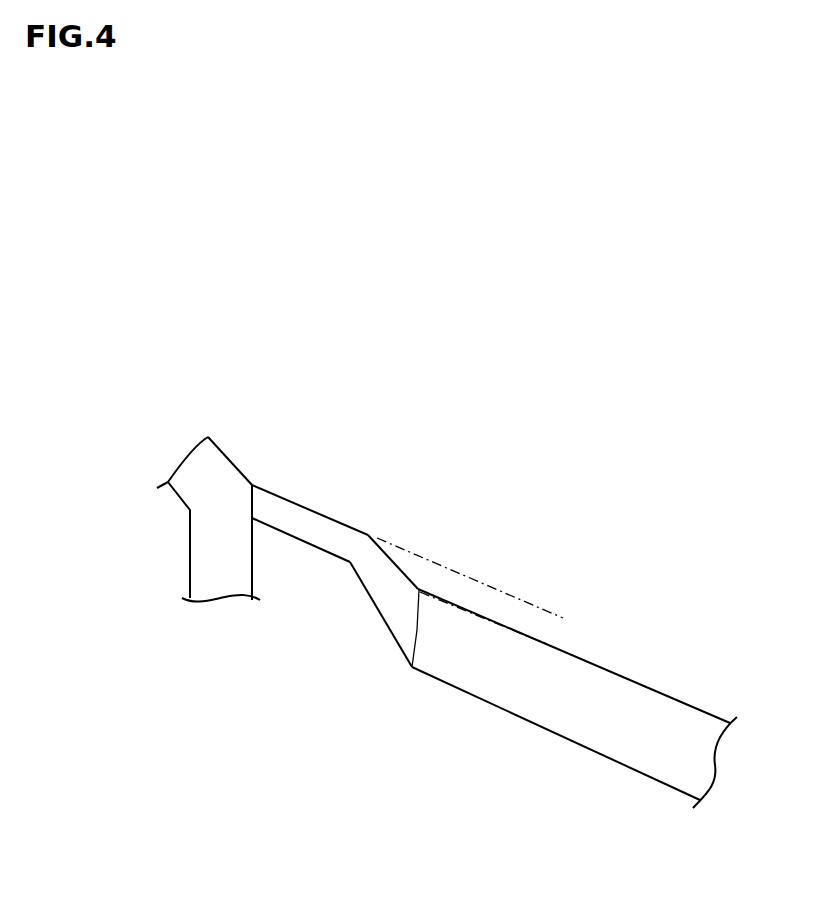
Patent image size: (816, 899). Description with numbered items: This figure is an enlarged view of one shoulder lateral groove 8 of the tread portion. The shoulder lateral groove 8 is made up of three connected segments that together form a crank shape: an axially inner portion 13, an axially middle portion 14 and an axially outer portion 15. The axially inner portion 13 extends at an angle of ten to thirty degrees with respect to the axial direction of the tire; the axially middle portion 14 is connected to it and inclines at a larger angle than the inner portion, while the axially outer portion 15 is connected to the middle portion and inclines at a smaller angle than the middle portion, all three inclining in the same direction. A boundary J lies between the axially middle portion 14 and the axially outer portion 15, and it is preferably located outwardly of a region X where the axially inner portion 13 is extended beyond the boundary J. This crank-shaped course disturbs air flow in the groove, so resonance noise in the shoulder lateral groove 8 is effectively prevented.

The shoulder lateral groove 8 is at (613, 698).
The axially inner portion 13 is at (310, 517).
The axially middle portion 14 is at (373, 603).
The axially outer portion 15 is at (537, 730).
The boundary J is at (417, 628).
The region X is at (555, 618).